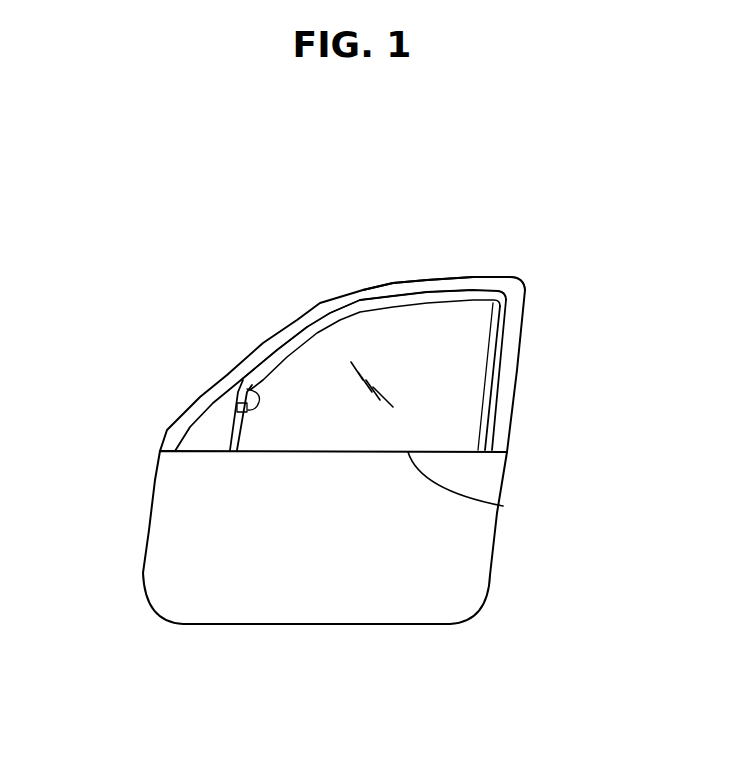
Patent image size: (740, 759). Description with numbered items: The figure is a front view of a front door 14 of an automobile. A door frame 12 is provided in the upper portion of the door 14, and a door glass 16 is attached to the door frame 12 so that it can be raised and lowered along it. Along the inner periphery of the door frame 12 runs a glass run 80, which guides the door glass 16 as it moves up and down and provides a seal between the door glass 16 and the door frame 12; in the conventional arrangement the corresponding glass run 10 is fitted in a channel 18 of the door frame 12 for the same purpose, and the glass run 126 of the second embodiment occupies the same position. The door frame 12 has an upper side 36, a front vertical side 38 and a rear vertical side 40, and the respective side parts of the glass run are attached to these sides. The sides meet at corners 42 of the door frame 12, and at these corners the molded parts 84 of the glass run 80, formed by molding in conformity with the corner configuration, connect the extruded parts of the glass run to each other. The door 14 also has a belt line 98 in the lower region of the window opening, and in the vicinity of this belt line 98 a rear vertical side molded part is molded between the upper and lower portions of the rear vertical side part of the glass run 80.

The glass run 10 is at (345, 306).
The door frame 12 is at (267, 350).
The front door 14 is at (473, 570).
The door glass 16 is at (450, 402).
The channel 18 is at (330, 313).
The upper side 36 is at (475, 280).
The front vertical side 38 is at (230, 437).
The rear vertical side 40 is at (510, 365).
The corners 42 is at (235, 407).
The glass run 80 is at (436, 289).
The molded parts 84 is at (238, 388).
The belt line 98 is at (505, 507).
The glass run 126 is at (376, 298).